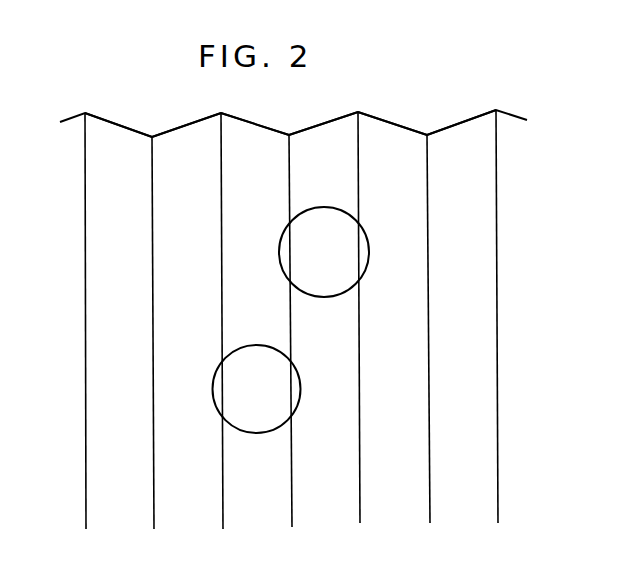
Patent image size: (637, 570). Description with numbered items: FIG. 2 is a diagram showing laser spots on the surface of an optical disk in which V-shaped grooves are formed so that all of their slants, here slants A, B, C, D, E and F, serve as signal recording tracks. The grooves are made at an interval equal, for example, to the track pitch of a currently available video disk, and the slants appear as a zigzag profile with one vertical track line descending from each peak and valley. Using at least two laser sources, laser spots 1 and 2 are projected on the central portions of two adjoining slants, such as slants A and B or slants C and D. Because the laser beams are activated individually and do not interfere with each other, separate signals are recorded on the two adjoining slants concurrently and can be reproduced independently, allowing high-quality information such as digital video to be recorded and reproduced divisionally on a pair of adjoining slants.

The laser spot 1 is at (375, 222).
The laser spot 2 is at (307, 366).
The slant A is at (461, 117).
The slant B is at (392, 117).
The slant C is at (323, 117).
The slant D is at (255, 117).
The slant E is at (186, 118).
The slant F is at (118, 118).